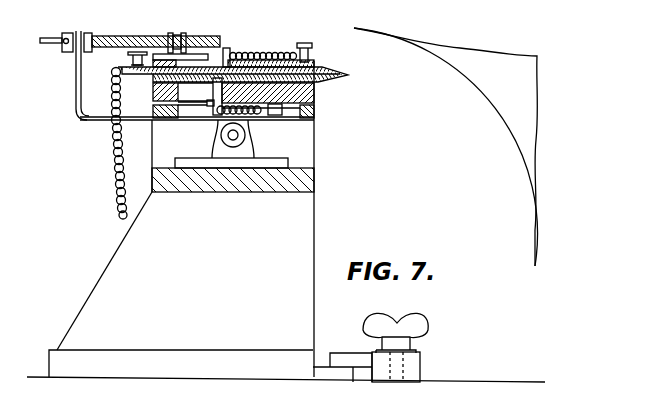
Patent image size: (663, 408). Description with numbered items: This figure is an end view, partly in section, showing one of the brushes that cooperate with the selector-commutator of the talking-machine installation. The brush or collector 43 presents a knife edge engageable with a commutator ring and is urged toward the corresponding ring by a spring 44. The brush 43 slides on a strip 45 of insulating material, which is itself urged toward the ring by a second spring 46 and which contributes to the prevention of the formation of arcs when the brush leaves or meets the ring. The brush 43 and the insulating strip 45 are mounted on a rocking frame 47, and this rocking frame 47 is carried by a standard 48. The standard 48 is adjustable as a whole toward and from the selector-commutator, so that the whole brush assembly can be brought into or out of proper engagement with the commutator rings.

The brush 43 is at (322, 70).
The spring 44 is at (238, 54).
The strip of insulating material 45 is at (320, 88).
The spring 46 is at (255, 112).
The rocking frame 47 is at (200, 112).
The standard 48 is at (181, 284).